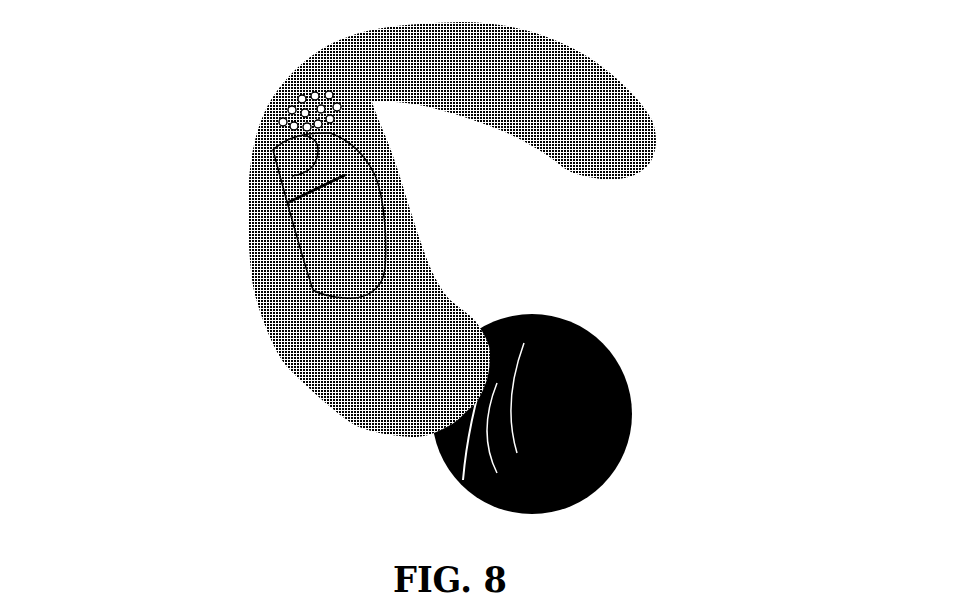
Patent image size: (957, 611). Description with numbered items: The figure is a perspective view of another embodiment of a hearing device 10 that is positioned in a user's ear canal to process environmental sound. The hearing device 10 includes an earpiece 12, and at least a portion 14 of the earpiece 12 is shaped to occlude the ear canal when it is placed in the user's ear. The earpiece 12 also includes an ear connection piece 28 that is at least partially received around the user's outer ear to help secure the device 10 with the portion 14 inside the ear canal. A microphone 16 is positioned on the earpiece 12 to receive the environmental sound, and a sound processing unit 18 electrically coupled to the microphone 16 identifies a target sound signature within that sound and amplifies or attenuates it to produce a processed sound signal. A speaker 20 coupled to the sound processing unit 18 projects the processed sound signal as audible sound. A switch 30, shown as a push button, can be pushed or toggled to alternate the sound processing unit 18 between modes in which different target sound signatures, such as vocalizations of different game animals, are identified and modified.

The hearing device 10 is at (573, 210).
The earpiece 12 is at (632, 435).
The portion of the earpiece 14 is at (560, 460).
The microphone 16 is at (280, 121).
The sound processing unit 18 is at (362, 273).
The speaker 20 is at (663, 415).
The ear connection piece 28 is at (375, 66).
The switch 30 is at (296, 175).